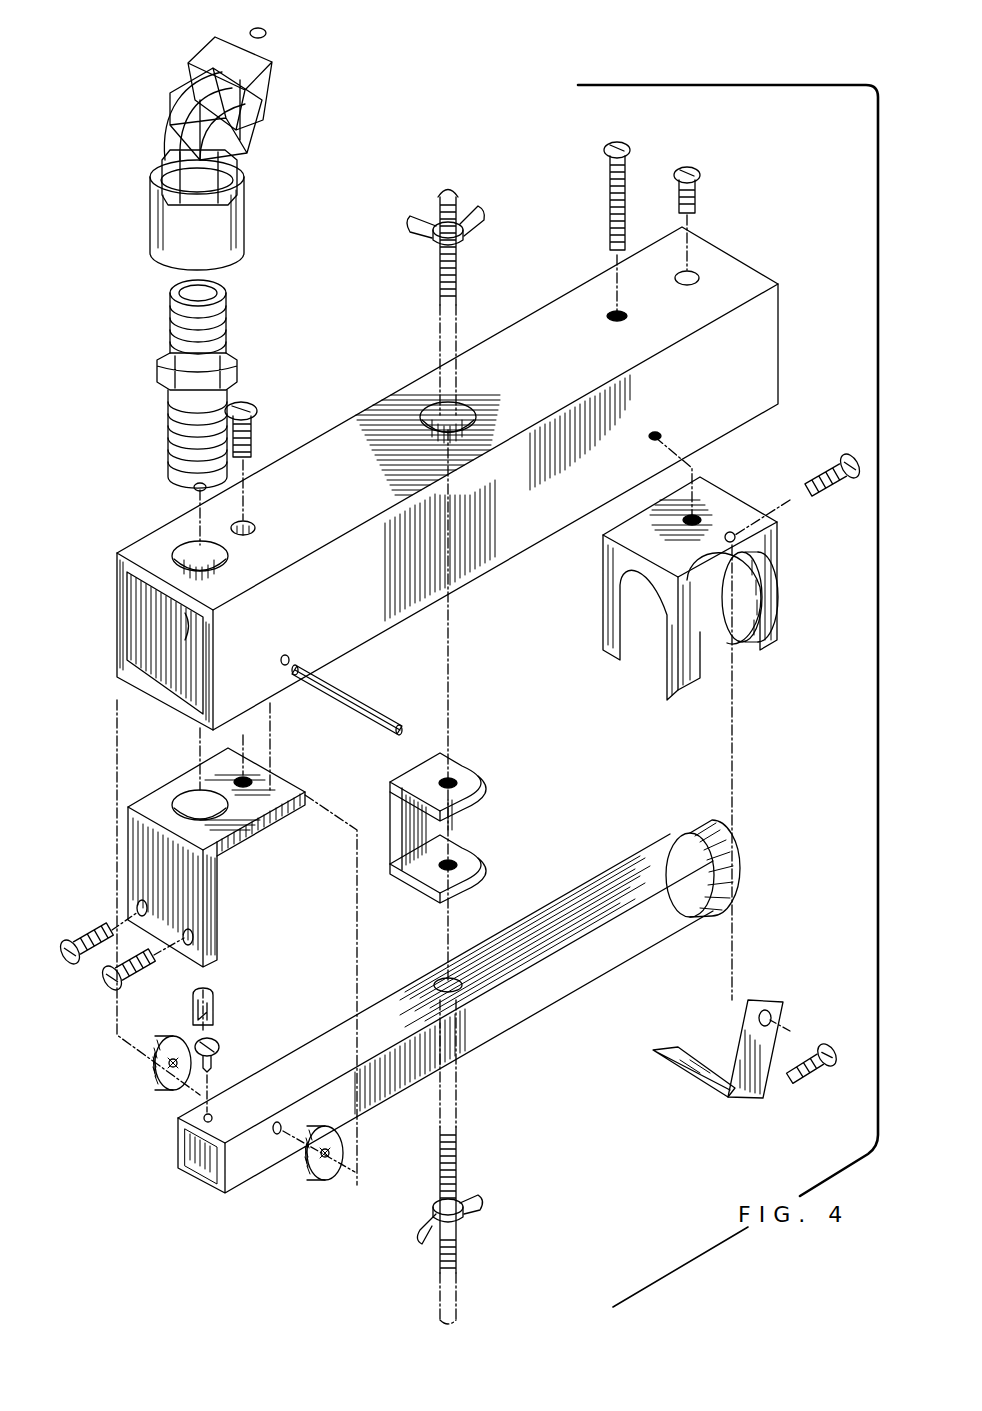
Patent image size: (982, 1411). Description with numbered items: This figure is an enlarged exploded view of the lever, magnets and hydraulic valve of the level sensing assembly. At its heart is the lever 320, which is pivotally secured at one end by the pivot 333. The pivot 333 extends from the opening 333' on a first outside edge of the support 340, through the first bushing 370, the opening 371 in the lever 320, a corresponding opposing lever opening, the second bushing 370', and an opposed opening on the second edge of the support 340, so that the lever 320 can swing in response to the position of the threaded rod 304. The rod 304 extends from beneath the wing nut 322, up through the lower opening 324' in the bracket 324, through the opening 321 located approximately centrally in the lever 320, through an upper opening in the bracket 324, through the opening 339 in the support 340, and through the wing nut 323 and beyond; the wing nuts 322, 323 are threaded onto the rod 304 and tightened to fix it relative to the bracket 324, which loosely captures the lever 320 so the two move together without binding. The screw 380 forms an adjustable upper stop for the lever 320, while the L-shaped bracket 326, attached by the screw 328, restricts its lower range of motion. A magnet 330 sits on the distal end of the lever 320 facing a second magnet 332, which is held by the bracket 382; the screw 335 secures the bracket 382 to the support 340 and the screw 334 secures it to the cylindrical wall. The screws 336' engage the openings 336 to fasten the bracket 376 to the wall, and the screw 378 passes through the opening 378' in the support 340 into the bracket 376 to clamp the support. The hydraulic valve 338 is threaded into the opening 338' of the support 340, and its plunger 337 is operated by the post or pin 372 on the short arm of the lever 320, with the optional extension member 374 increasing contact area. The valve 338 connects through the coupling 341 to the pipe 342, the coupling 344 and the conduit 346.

The threaded rod 304 is at (460, 196).
The lever 320 is at (580, 994).
The opening in lever 321 is at (452, 978).
The wing nut 322 is at (478, 1206).
The wing nut 323 is at (475, 236).
The bracket 324 is at (418, 828).
The lower opening in bracket 324' is at (498, 848).
The L-shaped bracket 326 is at (752, 1100).
The screw 328 is at (822, 1066).
The magnet 330 is at (708, 798).
The magnet 332 is at (755, 642).
The pivot 333 is at (362, 700).
The opening in support 333' is at (311, 637).
The screw 334 is at (838, 492).
The screw 335 is at (702, 180).
The openings 336 is at (173, 899).
The screws 336' is at (84, 930).
The plunger 337 is at (194, 487).
The hydraulic valve 338 is at (229, 384).
The opening in support 338' is at (160, 543).
The opening in support 339 is at (430, 404).
The support 340 is at (588, 381).
The coupling 341 is at (244, 232).
The pipe 342 is at (182, 130).
The coupling 344 is at (262, 122).
The pipe or conduit 346 is at (270, 47).
The first bushing 370 is at (314, 1173).
The second bushing 370' is at (150, 1084).
The opening in lever 371 is at (278, 1135).
The post or pin 372 is at (222, 1046).
The extension member 374 is at (215, 1005).
The bracket 376 is at (270, 828).
The screw 378 is at (275, 417).
The opening in support 378' is at (271, 516).
The screw 380 is at (605, 166).
The bracket 382 is at (616, 528).